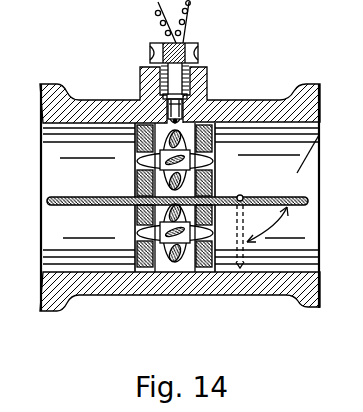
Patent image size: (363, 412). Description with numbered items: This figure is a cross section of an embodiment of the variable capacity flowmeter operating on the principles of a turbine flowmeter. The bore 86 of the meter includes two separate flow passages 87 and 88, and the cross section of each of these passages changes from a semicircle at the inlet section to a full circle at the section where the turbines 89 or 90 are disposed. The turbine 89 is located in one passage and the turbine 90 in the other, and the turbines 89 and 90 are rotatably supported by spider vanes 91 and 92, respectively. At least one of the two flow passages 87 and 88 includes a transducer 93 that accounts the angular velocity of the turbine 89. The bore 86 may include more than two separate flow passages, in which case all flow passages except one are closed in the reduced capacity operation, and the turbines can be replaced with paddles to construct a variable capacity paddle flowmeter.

The bore 86 is at (243, 122).
The flow passage 87 is at (329, 120).
The flow passage 88 is at (297, 219).
The turbine 89 is at (155, 140).
The turbine 90 is at (188, 247).
The spider vane 91 is at (134, 140).
The spider vane 92 is at (124, 240).
The transducer 93 is at (222, 99).